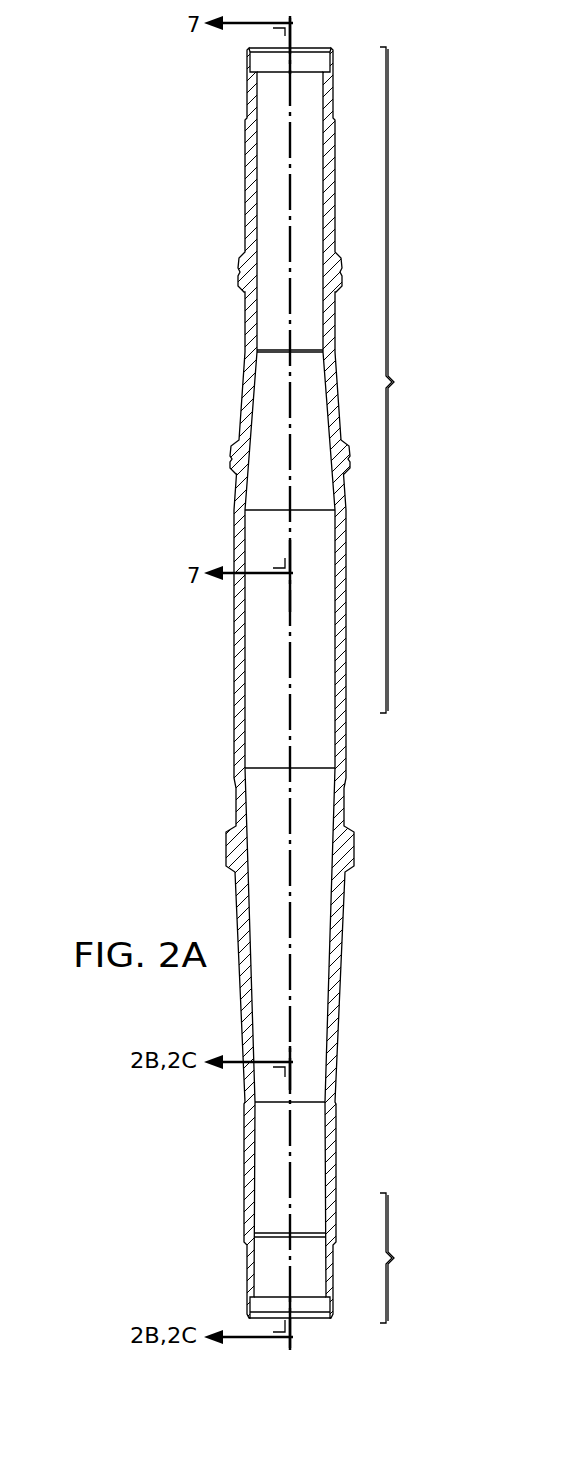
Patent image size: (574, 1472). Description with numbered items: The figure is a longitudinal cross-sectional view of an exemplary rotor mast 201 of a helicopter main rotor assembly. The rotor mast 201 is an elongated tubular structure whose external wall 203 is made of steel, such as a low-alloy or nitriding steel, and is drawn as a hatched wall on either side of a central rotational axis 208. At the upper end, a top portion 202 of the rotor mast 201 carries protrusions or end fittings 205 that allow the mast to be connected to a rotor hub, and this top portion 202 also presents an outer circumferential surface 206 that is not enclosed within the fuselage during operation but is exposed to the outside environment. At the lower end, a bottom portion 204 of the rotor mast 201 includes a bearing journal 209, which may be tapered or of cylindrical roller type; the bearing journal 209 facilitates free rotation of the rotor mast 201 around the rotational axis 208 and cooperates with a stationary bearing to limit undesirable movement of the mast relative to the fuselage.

The rotor mast 201 is at (121, 212).
The top portion 202 is at (409, 380).
The external wall 203 is at (234, 637).
The bottom portion 204 is at (410, 1258).
The end fittings 205 is at (248, 68).
The outer circumferential surface 206 is at (244, 395).
The rotational axis 208 is at (272, 826).
The bearing journal 209 is at (216, 1259).